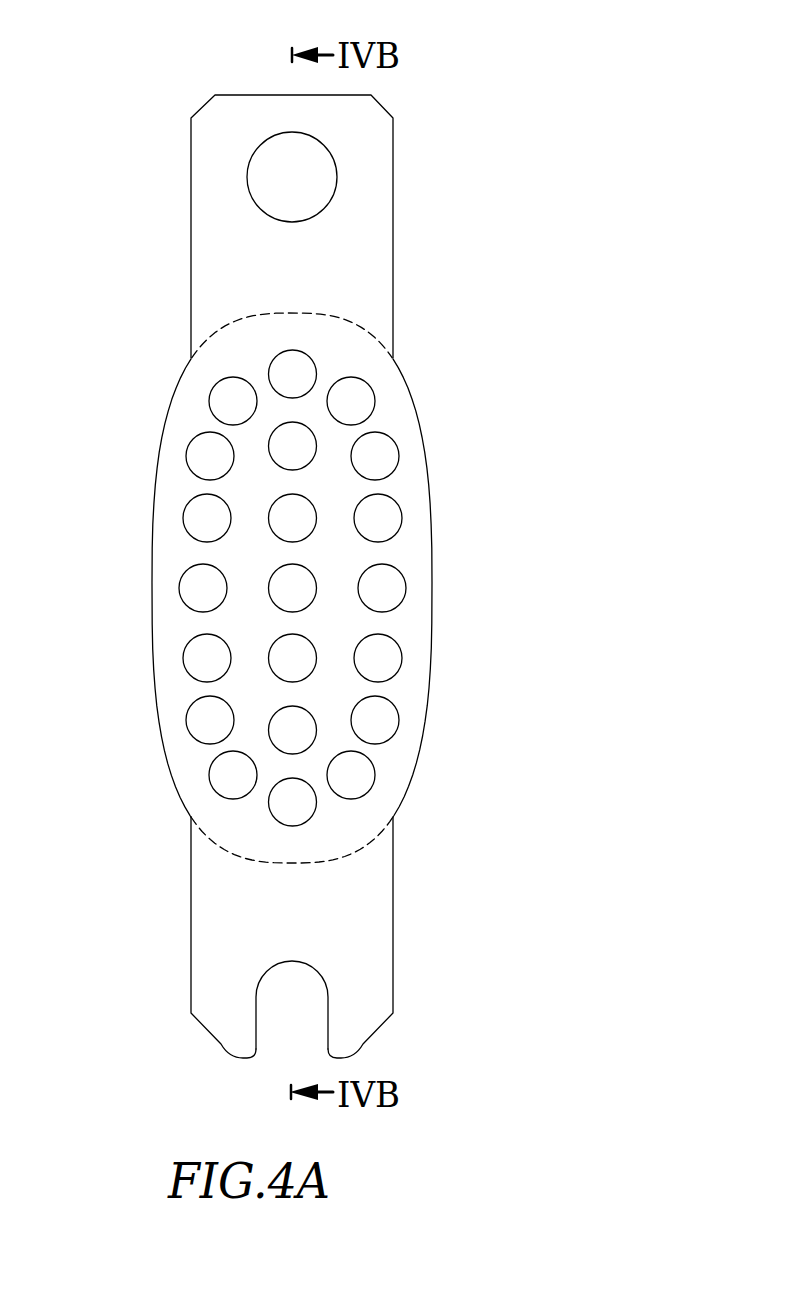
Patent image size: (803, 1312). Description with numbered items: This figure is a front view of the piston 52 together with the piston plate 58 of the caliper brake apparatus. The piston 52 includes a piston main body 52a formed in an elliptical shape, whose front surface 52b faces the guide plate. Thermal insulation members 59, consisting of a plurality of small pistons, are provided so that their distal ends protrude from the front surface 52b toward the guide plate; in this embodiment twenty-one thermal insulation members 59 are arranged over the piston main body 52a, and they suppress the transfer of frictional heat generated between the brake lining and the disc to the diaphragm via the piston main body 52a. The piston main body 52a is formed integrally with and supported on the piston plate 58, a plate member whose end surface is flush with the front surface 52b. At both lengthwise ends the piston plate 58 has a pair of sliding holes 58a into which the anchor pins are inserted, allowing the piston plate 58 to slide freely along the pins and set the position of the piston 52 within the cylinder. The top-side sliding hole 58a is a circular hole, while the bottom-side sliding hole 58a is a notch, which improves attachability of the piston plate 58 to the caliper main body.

The piston 52 is at (408, 92).
The piston main body 52a is at (153, 527).
The front surface 52b is at (178, 620).
The piston plate 58 is at (225, 250).
The sliding holes 58a is at (253, 167).
The thermal insulation members 59 is at (225, 782).